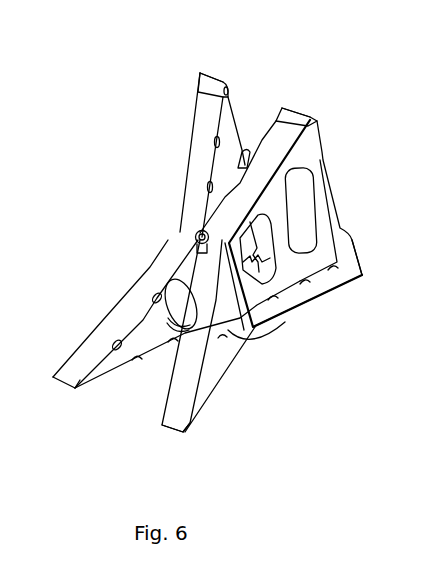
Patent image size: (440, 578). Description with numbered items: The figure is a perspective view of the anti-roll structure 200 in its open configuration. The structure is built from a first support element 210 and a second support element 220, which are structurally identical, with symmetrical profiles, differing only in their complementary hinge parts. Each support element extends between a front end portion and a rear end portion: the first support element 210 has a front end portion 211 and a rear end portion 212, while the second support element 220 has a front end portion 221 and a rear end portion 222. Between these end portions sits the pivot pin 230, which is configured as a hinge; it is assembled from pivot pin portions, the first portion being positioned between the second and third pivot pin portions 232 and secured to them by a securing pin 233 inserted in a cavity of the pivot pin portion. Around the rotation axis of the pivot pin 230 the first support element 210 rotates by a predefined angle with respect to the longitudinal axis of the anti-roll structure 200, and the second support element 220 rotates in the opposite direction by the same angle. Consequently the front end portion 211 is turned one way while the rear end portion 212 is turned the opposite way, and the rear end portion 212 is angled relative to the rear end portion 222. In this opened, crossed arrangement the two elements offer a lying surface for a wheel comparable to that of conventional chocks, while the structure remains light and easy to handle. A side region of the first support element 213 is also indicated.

The anti-roll structure 200 is at (82, 53).
The first support element 210 is at (345, 145).
The second support element 220 is at (178, 126).
The pivot pin 230 is at (183, 239).
The securing pin 233 is at (200, 230).
The rear end portion of the second support element 222 is at (239, 84).
The rear end portion of the first support element 212 is at (320, 114).
The front end portion of the first support element 211 is at (55, 376).
The front end portion of the second support element 221 is at (220, 397).
The second and third pivot pin portions 232 is at (282, 320).
The side edge of first panel 213 is at (439, 420).